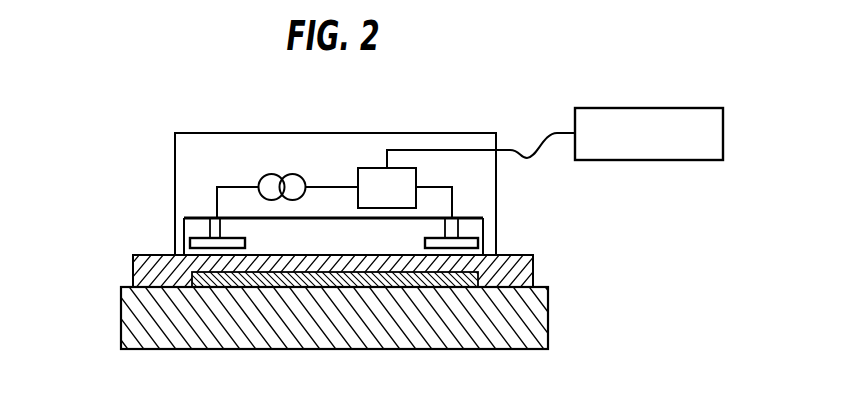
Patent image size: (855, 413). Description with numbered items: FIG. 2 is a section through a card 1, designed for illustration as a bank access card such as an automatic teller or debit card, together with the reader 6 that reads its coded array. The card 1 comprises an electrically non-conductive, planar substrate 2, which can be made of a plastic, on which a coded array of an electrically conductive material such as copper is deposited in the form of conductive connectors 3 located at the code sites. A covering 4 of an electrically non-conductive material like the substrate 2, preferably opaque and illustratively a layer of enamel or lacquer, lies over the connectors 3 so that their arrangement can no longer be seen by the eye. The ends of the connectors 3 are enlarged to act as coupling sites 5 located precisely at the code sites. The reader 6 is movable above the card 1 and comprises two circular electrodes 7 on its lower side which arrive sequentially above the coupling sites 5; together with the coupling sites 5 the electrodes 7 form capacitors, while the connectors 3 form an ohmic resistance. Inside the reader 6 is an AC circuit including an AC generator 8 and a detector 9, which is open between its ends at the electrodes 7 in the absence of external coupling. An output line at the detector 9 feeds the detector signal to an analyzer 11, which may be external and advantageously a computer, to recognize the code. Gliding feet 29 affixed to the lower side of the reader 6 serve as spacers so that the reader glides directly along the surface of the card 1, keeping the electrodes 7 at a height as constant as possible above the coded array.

The card 1 is at (574, 279).
The substrate 2 is at (527, 322).
The connectors 3 is at (322, 278).
The covering 4 is at (157, 255).
The coupling sites 5 is at (200, 278).
The reader 6 is at (333, 163).
The electrodes 7 is at (173, 244).
The AC generator 8 is at (272, 174).
The detector 9 is at (373, 168).
The analyzer 11 is at (640, 108).
The gliding feet 29 is at (174, 229).